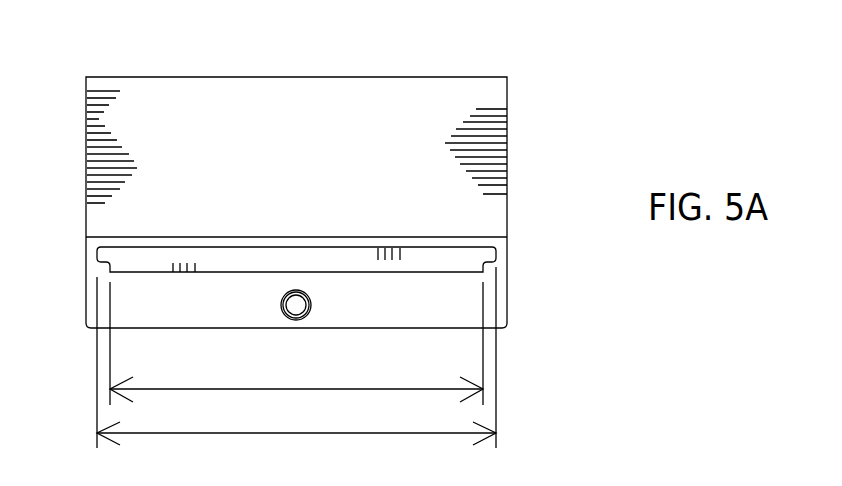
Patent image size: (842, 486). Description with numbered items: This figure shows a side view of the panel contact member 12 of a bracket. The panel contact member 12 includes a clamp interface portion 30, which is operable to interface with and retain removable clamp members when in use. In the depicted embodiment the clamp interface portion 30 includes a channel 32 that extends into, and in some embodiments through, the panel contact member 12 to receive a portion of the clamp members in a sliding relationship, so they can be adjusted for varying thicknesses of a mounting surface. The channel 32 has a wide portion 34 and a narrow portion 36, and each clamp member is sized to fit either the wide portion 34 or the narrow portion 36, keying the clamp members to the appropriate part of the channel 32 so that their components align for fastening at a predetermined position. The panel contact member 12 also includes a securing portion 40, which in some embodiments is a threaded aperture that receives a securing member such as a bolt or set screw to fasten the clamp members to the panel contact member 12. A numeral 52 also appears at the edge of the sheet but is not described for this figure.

The panel contact member 12 is at (540, 135).
The clamp interface portion 30 is at (512, 272).
The channel 32 is at (130, 265).
The wide portion 34 is at (302, 433).
The narrow portion 36 is at (300, 389).
The securing portion 40 is at (280, 332).
The element 52 is at (681, 468).